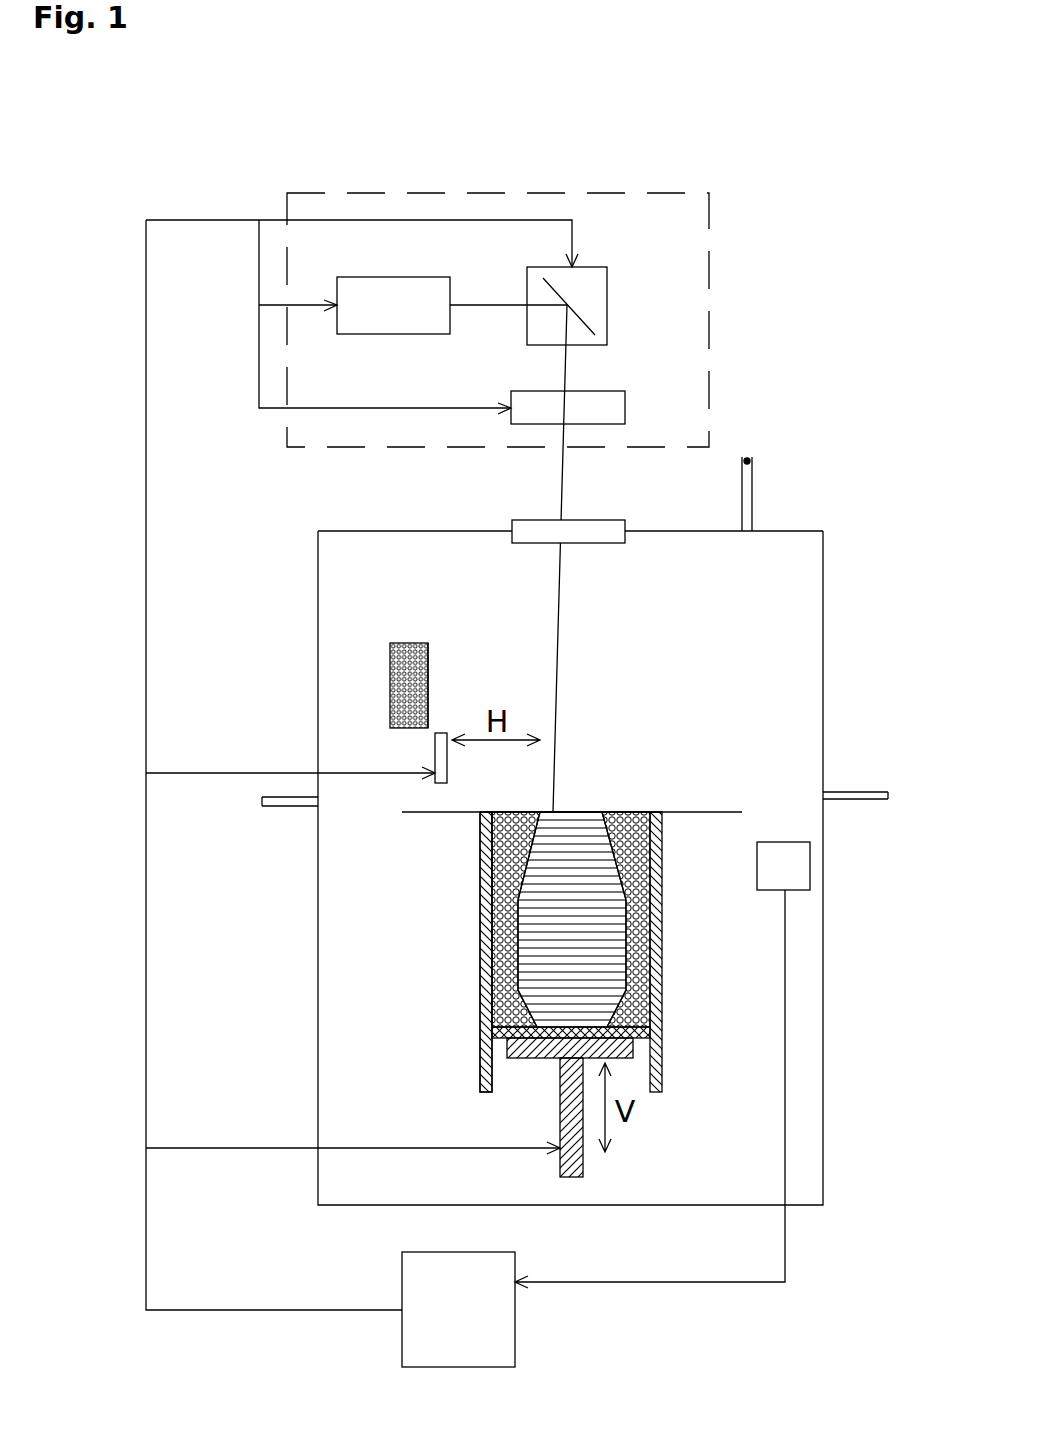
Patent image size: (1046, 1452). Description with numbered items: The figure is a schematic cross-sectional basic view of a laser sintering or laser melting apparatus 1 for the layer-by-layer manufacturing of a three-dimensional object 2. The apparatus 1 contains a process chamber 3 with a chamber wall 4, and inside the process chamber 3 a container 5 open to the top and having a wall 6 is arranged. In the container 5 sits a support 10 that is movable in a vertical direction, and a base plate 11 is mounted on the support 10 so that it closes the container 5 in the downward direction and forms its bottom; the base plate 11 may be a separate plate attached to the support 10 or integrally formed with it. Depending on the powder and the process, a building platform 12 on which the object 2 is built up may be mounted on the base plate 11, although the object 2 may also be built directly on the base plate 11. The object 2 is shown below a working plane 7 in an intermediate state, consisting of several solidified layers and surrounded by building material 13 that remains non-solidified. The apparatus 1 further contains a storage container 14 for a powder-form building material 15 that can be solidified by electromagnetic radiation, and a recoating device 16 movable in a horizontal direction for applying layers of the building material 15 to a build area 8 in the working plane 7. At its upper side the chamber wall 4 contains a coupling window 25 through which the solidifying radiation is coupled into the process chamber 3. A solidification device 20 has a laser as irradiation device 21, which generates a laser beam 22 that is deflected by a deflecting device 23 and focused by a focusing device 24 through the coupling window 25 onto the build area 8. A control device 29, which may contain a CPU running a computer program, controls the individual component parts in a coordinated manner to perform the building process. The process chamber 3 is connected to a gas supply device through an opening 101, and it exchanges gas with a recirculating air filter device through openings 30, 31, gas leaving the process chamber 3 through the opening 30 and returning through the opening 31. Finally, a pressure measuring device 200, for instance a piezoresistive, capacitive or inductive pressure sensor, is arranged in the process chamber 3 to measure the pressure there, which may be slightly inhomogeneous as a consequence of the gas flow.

The laser sintering or laser melting apparatus 1 is at (791, 179).
The object 2 is at (585, 867).
The process chamber 3 is at (340, 580).
The chamber wall 4 is at (318, 1003).
The container 5 is at (678, 1014).
The wall 6 is at (657, 953).
The working plane 7 is at (712, 812).
The build area 8 is at (625, 812).
The support 10 is at (548, 1052).
The base plate 11 is at (505, 1053).
The building platform 12 is at (482, 1028).
The building material 13 is at (480, 853).
The storage container 14 is at (408, 643).
The building material 15 is at (428, 685).
The recoating device 16 is at (437, 757).
The solidification device 20 is at (712, 305).
The irradiation device 21 is at (396, 330).
The laser beam 22 is at (470, 305).
The deflecting device 23 is at (597, 278).
The focusing device 24 is at (595, 402).
The coupling window 25 is at (603, 530).
The control device 29 is at (458, 1309).
The opening 30 is at (806, 779).
The opening 31 is at (331, 813).
The opening 101 is at (731, 541).
The pressure measuring device 200 is at (797, 883).